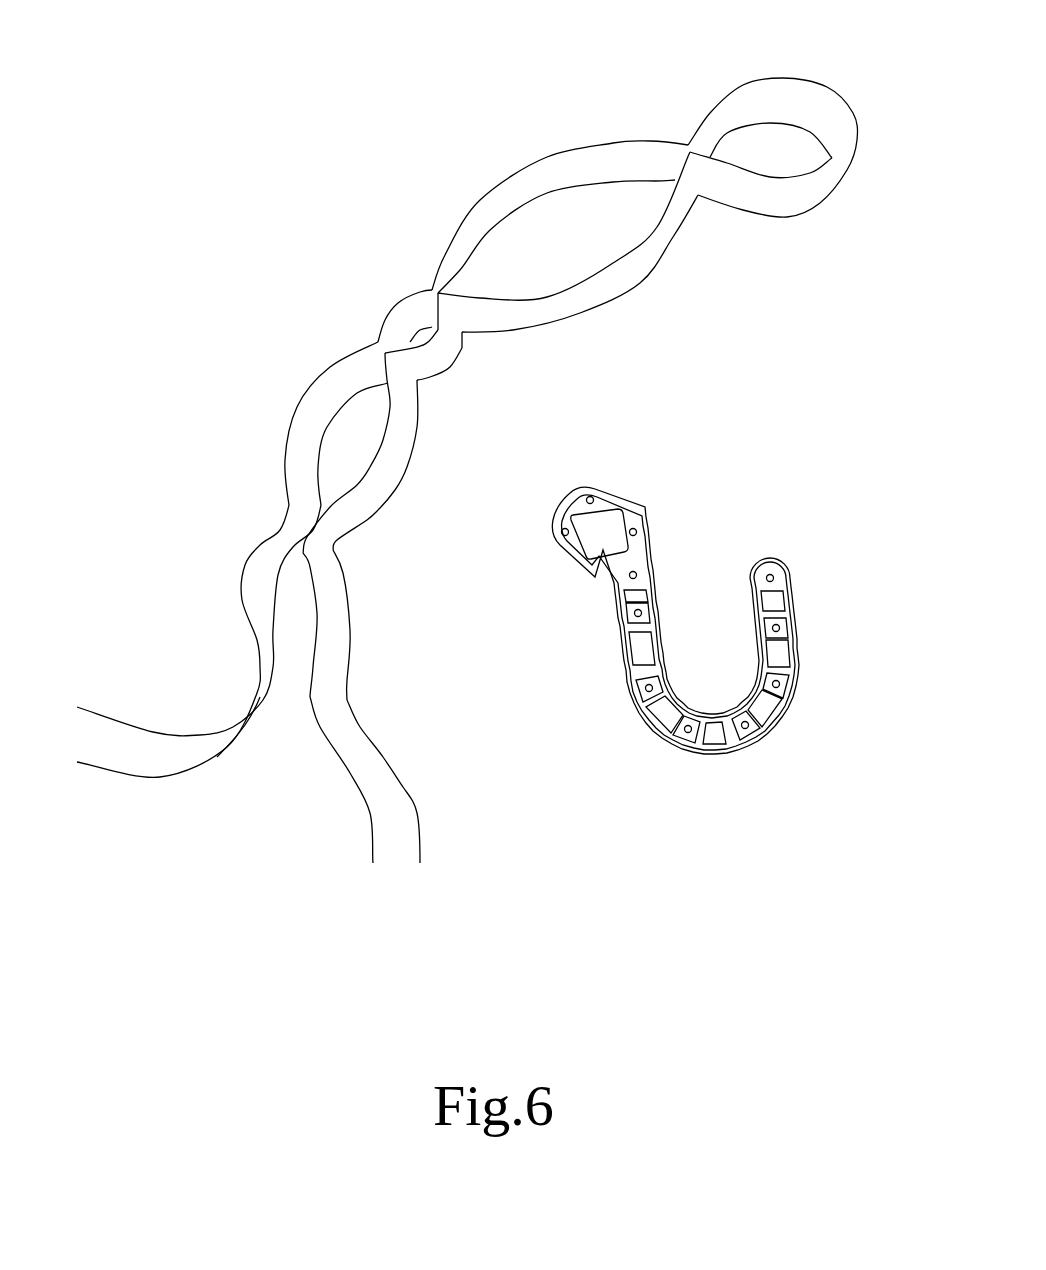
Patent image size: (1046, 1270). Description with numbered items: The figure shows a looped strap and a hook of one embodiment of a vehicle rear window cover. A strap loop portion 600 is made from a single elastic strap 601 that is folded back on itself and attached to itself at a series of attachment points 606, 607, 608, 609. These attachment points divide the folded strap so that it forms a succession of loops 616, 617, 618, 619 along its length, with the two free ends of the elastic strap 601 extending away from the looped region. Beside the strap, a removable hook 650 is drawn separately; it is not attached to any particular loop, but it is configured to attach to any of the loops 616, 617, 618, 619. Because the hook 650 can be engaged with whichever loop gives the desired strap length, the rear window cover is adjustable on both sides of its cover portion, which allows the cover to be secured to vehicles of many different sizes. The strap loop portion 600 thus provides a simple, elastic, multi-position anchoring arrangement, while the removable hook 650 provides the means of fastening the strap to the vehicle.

The strap loop portion 600 is at (205, 208).
The elastic strap 601 is at (247, 560).
The attachment point 606 is at (352, 555).
The attachment point 607 is at (428, 395).
The attachment point 608 is at (472, 342).
The attachment point 609 is at (703, 210).
The loop 616 is at (352, 443).
The loop 617 is at (420, 325).
The loop 618 is at (558, 228).
The loop 619 is at (780, 147).
The removable hook 650 is at (800, 643).